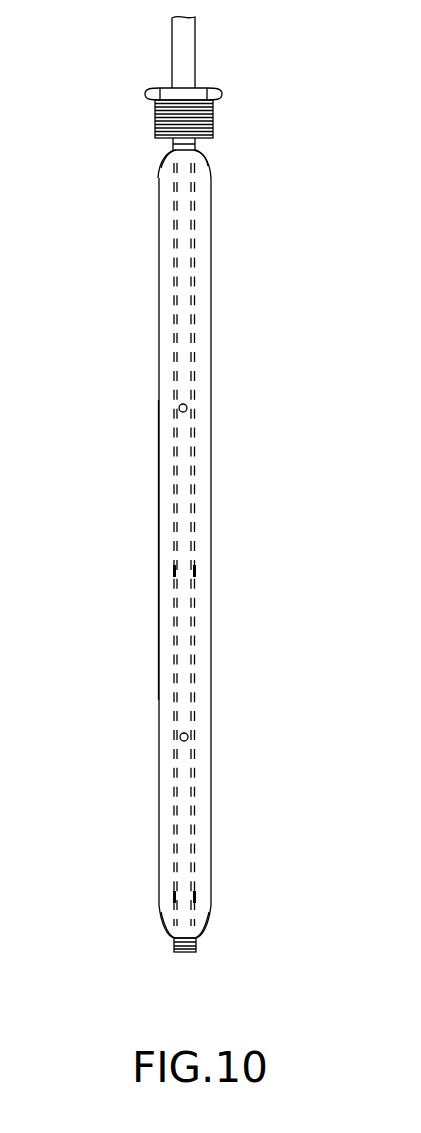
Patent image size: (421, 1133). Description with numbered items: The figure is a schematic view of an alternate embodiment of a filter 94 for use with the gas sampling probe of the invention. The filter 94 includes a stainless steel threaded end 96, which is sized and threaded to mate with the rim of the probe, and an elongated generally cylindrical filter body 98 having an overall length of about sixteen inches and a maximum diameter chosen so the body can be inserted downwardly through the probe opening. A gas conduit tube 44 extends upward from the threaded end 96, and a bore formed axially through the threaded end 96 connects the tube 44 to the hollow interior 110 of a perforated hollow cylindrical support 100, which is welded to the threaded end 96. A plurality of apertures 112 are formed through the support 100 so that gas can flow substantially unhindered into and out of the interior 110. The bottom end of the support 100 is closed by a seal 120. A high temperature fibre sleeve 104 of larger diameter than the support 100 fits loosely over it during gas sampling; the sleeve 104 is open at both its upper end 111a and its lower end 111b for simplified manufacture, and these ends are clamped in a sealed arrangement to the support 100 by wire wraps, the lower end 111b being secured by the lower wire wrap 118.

The gas conduit tube 44 is at (197, 64).
The filter 94 is at (286, 561).
The threaded steel end 96 is at (214, 108).
The filter body 98 is at (213, 664).
The perforated hollow cylindrical support 100 is at (179, 462).
The high temperature fibre sleeve 104 is at (159, 297).
The hollow interior 110 is at (165, 152).
The upper end of the sleeve 111a is at (210, 152).
The lower end of the sleeve 111b is at (197, 940).
The apertures 112 is at (179, 408).
The lower wire wrap 118 is at (172, 945).
The seal 120 is at (185, 953).